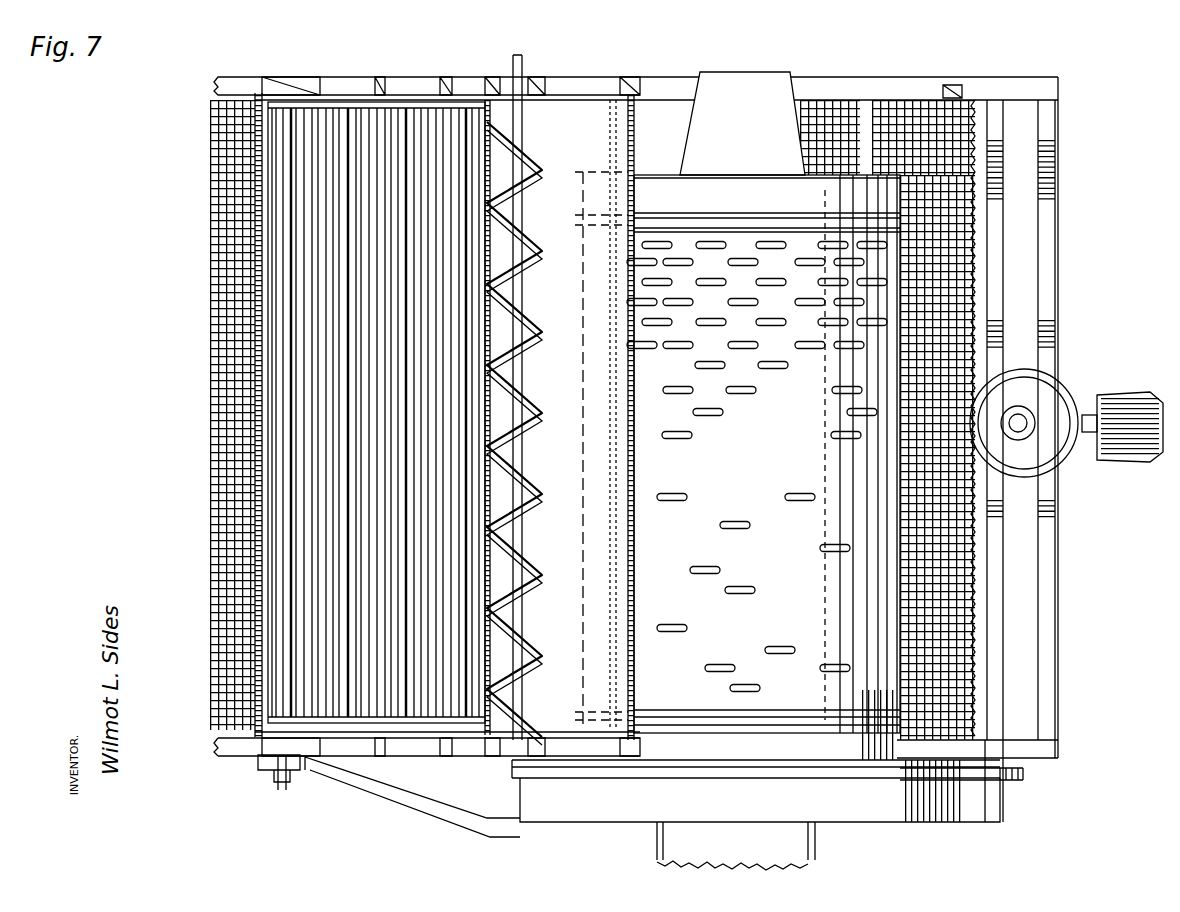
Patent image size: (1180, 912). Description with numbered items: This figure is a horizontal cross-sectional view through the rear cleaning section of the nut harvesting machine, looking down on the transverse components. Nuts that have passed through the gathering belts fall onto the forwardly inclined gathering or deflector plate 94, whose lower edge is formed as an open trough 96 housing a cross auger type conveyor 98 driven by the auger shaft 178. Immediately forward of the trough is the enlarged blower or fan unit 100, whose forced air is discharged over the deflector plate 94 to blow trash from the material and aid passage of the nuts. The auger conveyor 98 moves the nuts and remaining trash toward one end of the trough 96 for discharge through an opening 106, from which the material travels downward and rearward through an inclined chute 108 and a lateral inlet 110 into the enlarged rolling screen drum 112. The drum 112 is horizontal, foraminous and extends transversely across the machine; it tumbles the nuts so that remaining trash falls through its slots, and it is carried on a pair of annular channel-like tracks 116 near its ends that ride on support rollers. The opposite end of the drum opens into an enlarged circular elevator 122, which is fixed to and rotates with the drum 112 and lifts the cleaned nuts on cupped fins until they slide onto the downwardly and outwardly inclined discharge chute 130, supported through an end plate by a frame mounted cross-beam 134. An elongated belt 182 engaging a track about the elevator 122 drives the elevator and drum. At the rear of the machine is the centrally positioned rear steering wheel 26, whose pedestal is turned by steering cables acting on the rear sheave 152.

The rear steering wheel 26 is at (1104, 410).
The gathering or deflector plate 94 is at (636, 136).
The open trough 96 is at (533, 378).
The cross auger type conveyor 98 is at (528, 325).
The blower or fan unit 100 is at (435, 470).
The opening 106 is at (522, 118).
The inclined chute 108 is at (647, 113).
The lateral inlet 110 is at (752, 152).
The rolling screen drum 112 is at (762, 448).
The annular channel-like tracks 116 is at (668, 206).
The circular elevator 122 is at (516, 796).
The discharge chute 130 is at (780, 847).
The cross-beam 134 is at (903, 828).
The rear sheave 152 is at (1064, 376).
The auger shaft 178 is at (518, 58).
The elongated belt 182 is at (1022, 778).